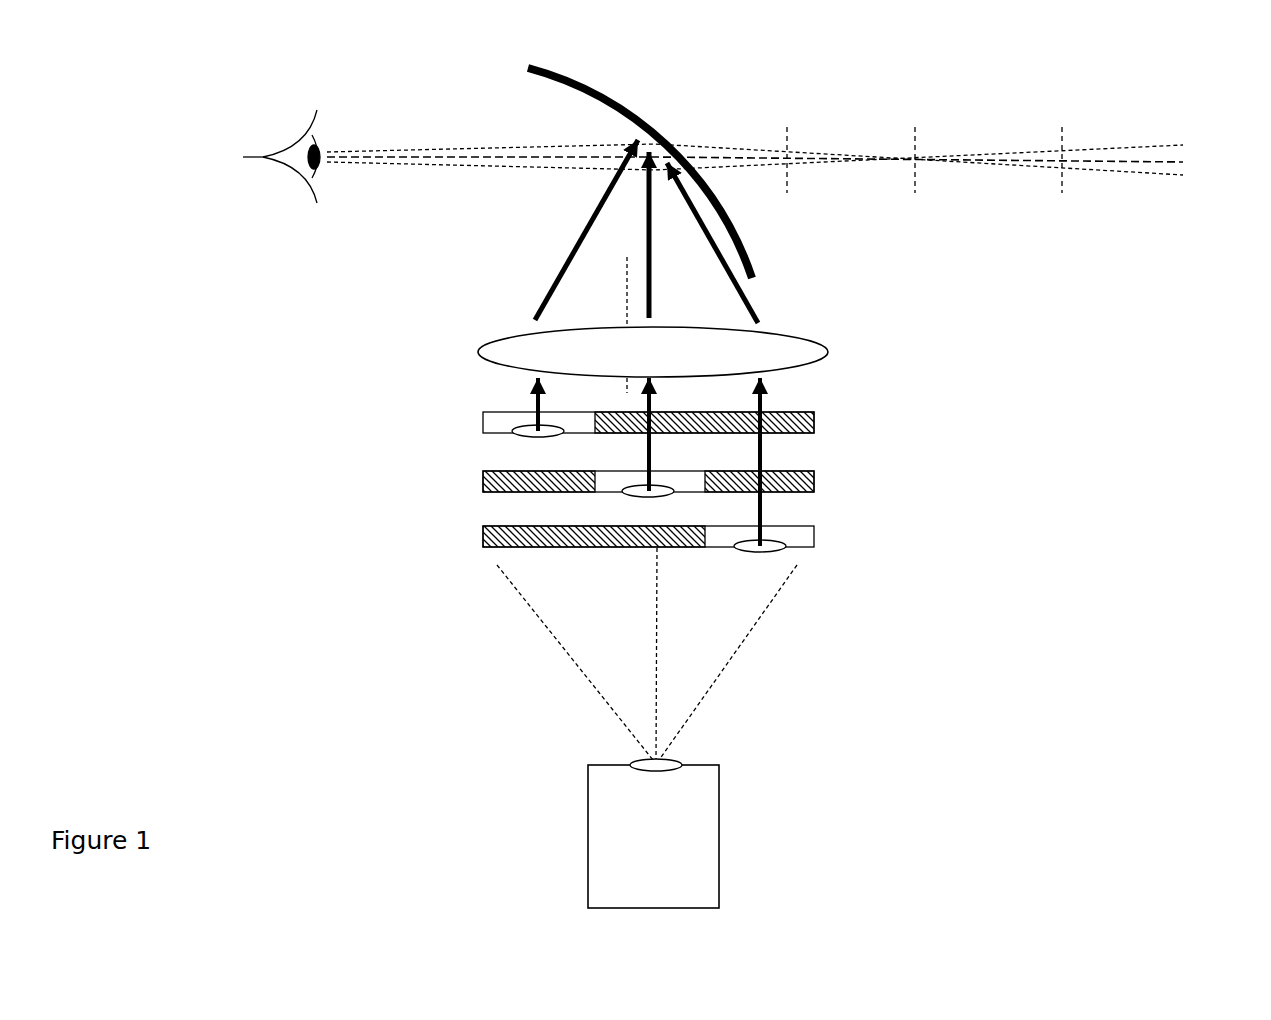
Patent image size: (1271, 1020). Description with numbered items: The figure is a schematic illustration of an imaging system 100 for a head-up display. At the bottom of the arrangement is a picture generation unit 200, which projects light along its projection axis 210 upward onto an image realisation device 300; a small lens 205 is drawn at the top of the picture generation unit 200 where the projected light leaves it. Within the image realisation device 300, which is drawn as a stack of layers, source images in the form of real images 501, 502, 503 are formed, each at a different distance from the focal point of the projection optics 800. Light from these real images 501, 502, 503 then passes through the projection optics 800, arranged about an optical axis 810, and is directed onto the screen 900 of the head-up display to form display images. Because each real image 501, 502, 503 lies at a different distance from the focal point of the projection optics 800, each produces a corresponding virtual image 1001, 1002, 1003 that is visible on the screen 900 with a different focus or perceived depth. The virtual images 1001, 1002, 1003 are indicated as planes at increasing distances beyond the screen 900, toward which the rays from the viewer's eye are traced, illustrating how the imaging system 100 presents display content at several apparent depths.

The imaging system 100 is at (1150, 410).
The picture generation unit 200 is at (719, 805).
The projector lens 205 is at (630, 762).
The projection axis 210 is at (657, 737).
The image realisation device 300 is at (453, 393).
The real image 501 is at (783, 548).
The real image 502 is at (648, 495).
The real image 503 is at (533, 435).
The projection optics 800 is at (812, 335).
The optical axis 810 is at (623, 300).
The screen 900 is at (567, 63).
The virtual image 1001 is at (787, 118).
The virtual image 1002 is at (915, 118).
The virtual image 1003 is at (1062, 118).